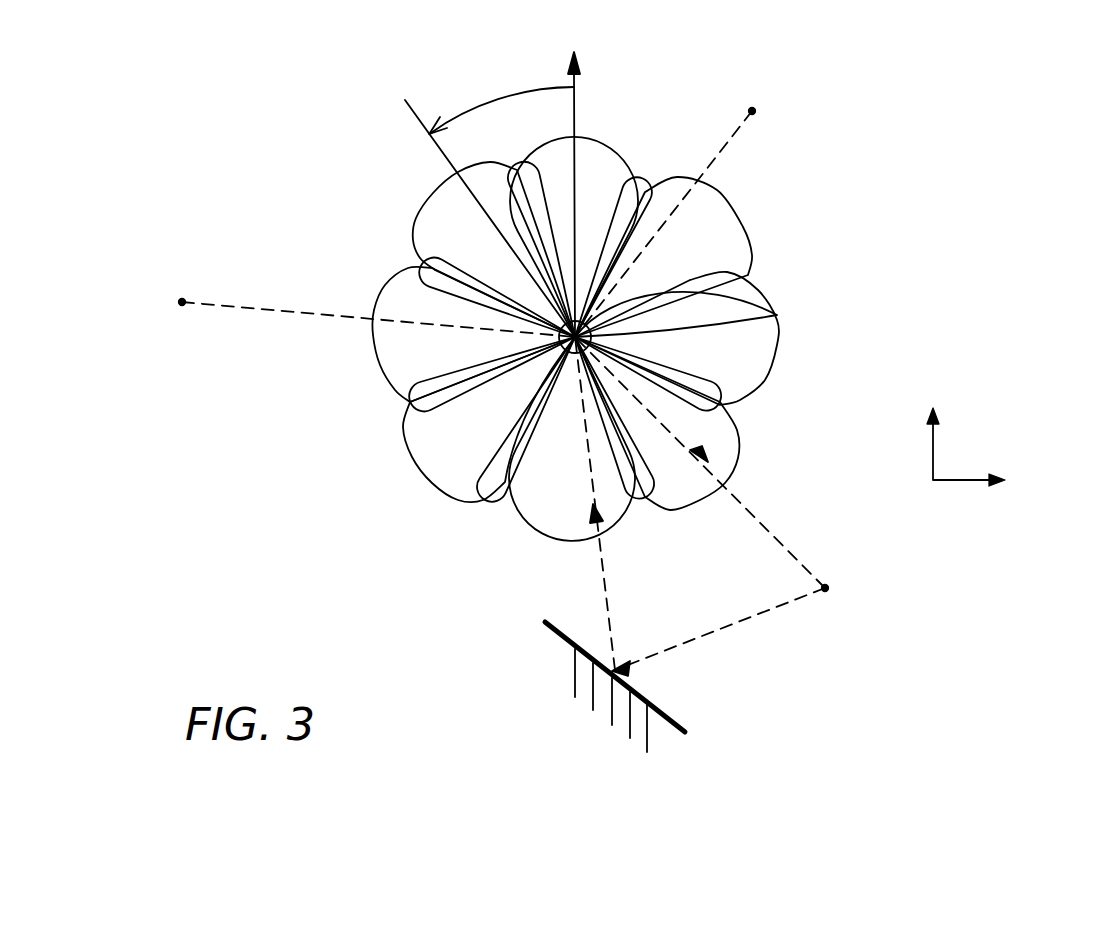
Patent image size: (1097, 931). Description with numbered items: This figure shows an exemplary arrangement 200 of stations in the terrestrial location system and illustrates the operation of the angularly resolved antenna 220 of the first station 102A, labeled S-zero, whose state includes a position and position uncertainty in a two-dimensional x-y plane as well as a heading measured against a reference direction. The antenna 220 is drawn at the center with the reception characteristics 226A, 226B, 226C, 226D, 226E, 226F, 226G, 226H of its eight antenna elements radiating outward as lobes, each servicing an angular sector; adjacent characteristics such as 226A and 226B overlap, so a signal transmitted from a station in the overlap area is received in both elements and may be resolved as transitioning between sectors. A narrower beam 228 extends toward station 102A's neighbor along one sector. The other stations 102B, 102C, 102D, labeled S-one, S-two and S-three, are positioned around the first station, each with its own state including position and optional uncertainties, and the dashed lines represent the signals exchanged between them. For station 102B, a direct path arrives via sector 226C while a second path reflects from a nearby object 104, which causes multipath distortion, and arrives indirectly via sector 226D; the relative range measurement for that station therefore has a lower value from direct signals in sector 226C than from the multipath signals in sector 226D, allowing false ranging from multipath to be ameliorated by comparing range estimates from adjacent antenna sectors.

The antenna system diagram 200 is at (1008, 131).
The angularly resolved antenna 220 is at (513, 480).
The antenna element reception characteristic 226A is at (743, 227).
The antenna element reception characteristic 226B is at (768, 381).
The antenna element reception characteristic 226C is at (666, 510).
The antenna element reception characteristic 226D is at (566, 542).
The antenna element reception characteristic 226E is at (413, 458).
The antenna element reception characteristic 226F is at (382, 373).
The antenna element reception characteristic 226G is at (433, 197).
The antenna element reception characteristic 226H is at (596, 125).
The narrow steered beam 228 is at (750, 275).
The nearby object 104 is at (669, 717).
The first station 102A is at (725, 288).
The station 102B is at (828, 588).
The station 102C is at (767, 210).
The station 102D is at (310, 320).